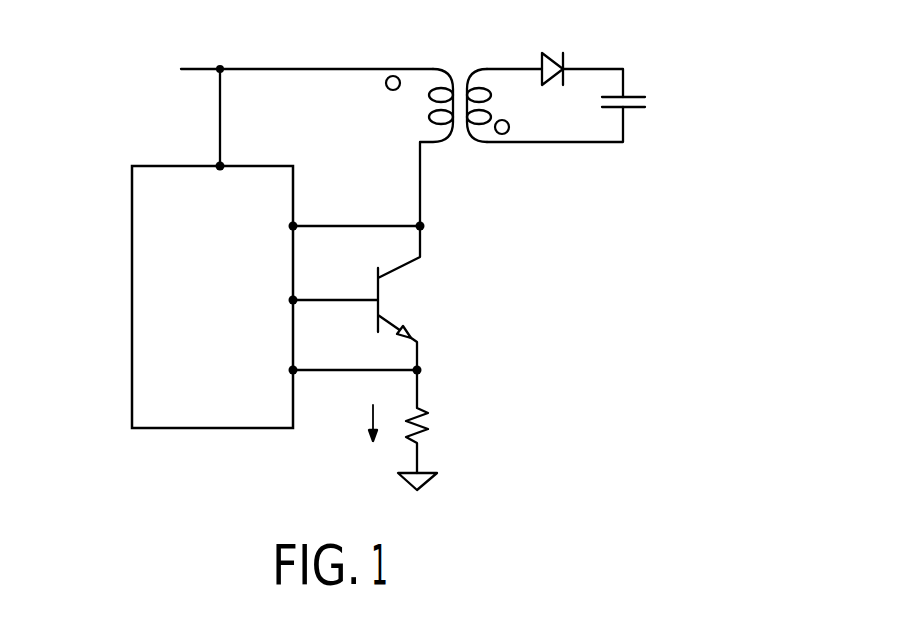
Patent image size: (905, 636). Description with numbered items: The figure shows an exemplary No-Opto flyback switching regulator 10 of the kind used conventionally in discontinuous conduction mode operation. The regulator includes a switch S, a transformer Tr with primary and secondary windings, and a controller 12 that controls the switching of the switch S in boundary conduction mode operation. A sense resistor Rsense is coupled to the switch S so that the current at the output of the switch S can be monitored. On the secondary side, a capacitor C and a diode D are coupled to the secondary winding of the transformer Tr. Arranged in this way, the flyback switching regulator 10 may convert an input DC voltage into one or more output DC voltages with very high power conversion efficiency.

The flyback switching regulator 10 is at (676, 57).
The controller 12 is at (132, 243).
The transformer Tr is at (453, 125).
The diode D is at (564, 58).
The capacitor C is at (632, 122).
The switch S is at (367, 298).
The sense resistor Rsense is at (459, 421).